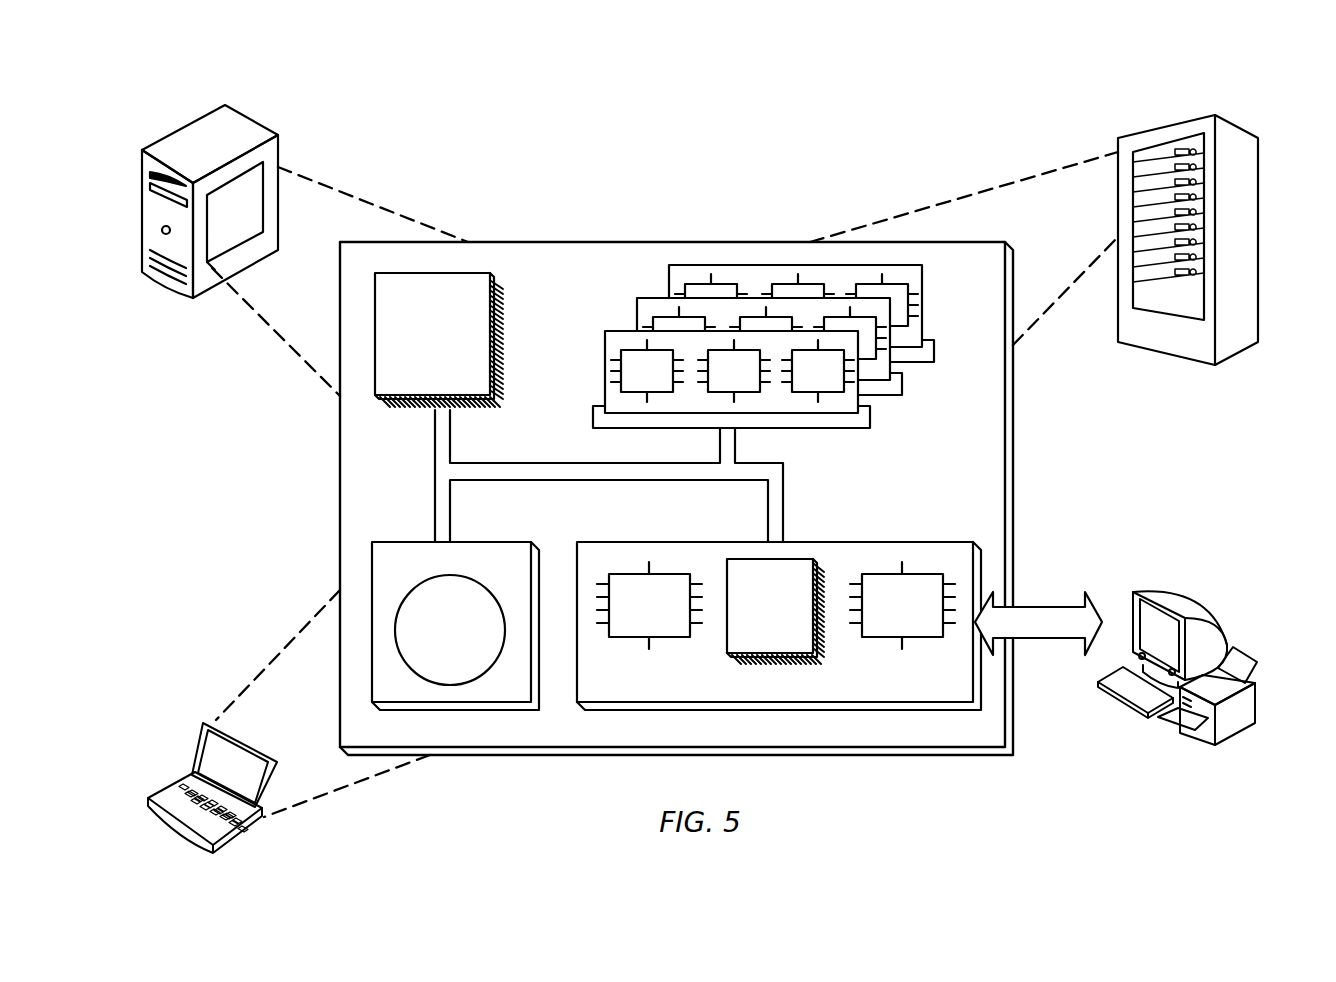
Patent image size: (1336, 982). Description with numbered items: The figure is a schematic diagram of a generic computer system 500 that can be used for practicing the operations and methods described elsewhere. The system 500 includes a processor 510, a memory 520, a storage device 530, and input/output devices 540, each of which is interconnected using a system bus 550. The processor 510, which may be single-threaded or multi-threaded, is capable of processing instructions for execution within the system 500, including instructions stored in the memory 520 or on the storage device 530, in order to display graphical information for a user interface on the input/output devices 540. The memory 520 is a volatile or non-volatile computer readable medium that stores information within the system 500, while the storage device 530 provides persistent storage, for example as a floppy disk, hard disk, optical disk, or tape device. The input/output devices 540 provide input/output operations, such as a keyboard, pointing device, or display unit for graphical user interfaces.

The generic computer system 500 is at (262, 65).
The processor 510 is at (439, 340).
The memory 520 is at (934, 398).
The storage device 530 is at (455, 626).
The input/output devices 540 is at (1137, 604).
The system bus 550 is at (610, 481).